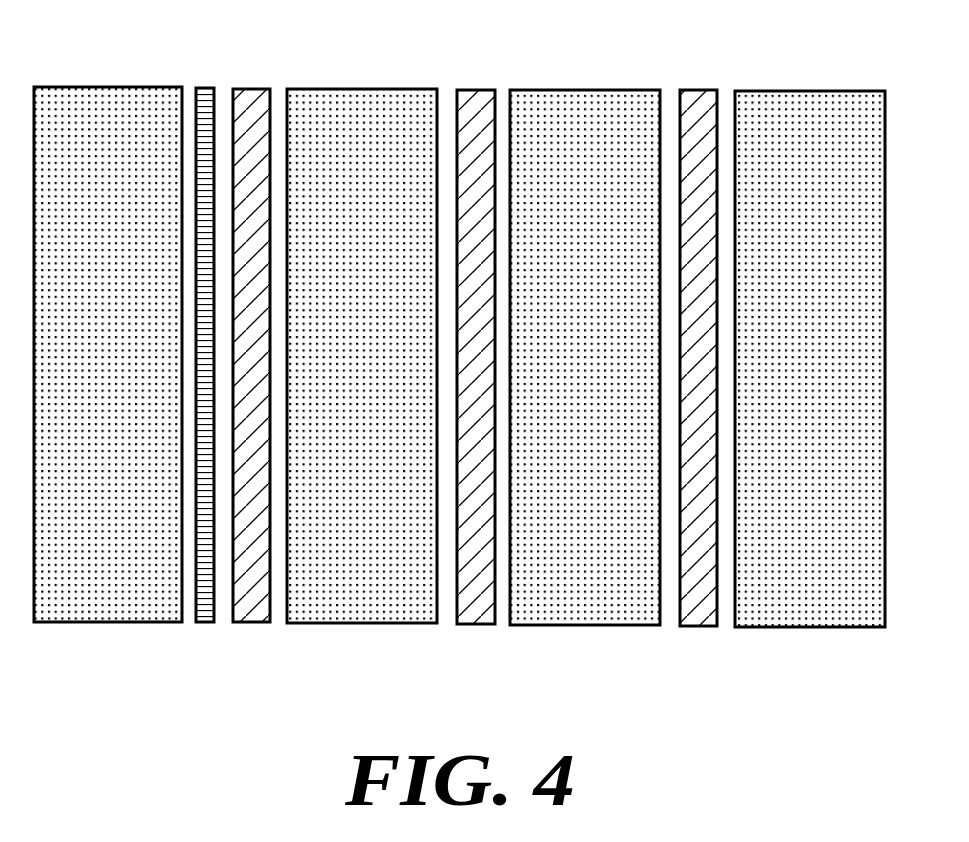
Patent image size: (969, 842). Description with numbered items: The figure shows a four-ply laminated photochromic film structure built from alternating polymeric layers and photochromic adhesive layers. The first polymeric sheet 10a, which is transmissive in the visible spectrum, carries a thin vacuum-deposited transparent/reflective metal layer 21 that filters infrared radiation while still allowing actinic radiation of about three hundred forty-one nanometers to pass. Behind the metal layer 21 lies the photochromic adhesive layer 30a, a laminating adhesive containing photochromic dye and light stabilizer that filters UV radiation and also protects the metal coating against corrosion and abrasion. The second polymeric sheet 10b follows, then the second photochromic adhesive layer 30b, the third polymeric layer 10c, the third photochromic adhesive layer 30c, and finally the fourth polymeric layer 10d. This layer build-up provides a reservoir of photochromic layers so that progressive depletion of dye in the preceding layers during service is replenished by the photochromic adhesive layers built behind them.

The polymeric sheet 10a is at (127, 87).
The polymeric sheet 10b is at (372, 89).
The third polymeric layer 10c is at (582, 90).
The fourth polymeric layer 10d is at (818, 91).
The transparent/reflective metal layer 21 is at (200, 88).
The photochromic adhesive layer 30a is at (258, 89).
The second photochromic adhesive layer 30b is at (474, 90).
The third photochromic adhesive layer 30c is at (693, 90).